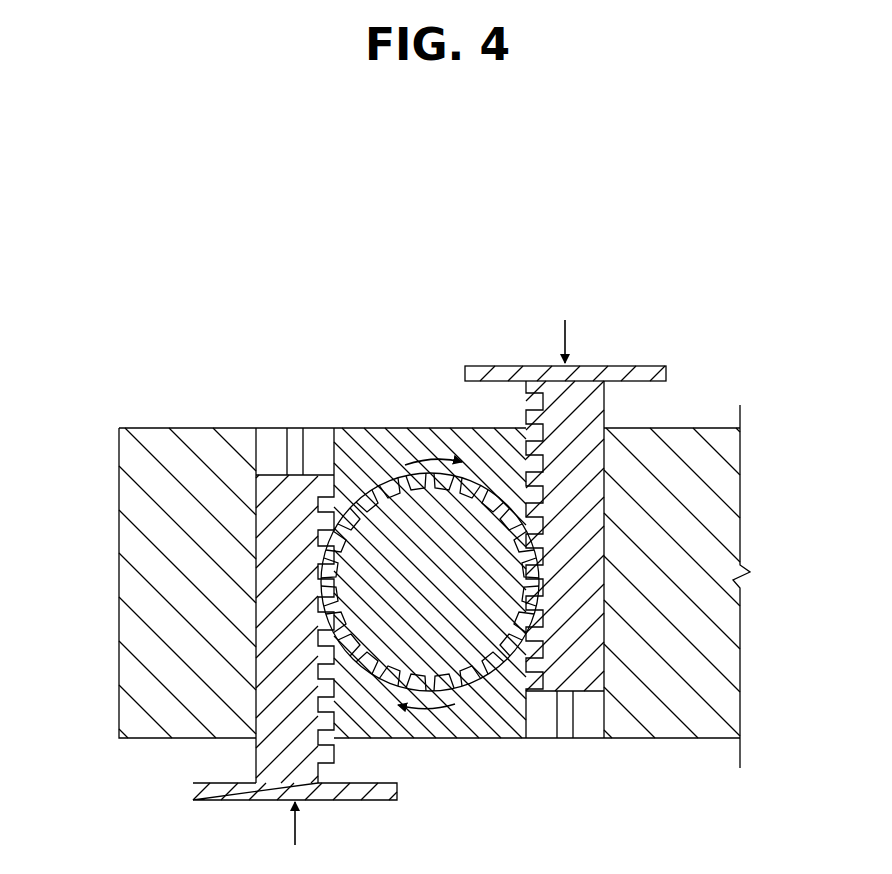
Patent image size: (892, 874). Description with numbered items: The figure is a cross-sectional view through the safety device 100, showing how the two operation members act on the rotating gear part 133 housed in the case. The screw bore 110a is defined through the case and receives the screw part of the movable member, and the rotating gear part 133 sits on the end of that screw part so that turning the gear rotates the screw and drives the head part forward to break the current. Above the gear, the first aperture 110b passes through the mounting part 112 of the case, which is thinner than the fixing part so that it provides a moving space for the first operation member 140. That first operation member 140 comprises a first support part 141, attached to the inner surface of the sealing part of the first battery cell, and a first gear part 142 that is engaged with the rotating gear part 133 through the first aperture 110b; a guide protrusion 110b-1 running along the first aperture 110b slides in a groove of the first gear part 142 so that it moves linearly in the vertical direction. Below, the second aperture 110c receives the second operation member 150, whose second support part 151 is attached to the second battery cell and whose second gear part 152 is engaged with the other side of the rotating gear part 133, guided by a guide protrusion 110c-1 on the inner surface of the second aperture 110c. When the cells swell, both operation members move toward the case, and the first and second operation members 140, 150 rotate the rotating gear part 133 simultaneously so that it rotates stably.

The safety device 100 is at (609, 300).
The screw bore 110a is at (458, 690).
The first aperture 110b is at (600, 725).
The guide protrusion 110b-1 is at (565, 720).
The second aperture 110c is at (262, 440).
The guide protrusion 110c-1 is at (295, 445).
The mounting part 112 is at (725, 480).
The rotating gear part 133 is at (388, 520).
The first operation member 140 is at (626, 539).
The first support part 141 is at (630, 375).
The first gear part 142 is at (596, 412).
The second operation member 150 is at (233, 648).
The second support part 151 is at (230, 790).
The second gear part 152 is at (257, 752).